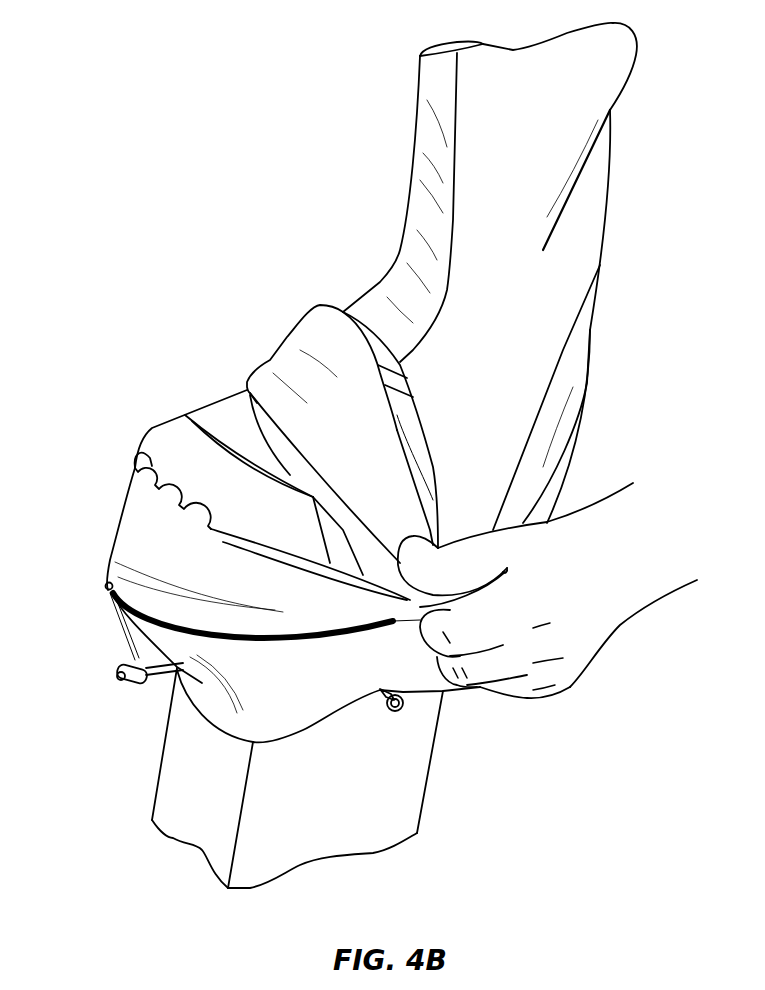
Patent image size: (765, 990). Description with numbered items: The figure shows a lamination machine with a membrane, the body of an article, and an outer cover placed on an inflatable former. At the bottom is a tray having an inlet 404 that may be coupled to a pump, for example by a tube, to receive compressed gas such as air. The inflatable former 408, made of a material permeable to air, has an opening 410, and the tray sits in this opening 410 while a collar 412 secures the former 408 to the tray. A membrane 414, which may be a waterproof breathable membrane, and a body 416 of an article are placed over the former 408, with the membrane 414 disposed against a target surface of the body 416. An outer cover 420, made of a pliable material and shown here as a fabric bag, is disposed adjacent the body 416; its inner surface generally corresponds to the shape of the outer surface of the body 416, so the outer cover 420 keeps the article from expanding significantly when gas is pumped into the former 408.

The inlet 404 is at (383, 806).
The inflatable former 408 is at (193, 567).
The opening 410 is at (245, 745).
The collar 412 is at (277, 647).
The membrane 414 is at (203, 541).
The body 416 is at (193, 456).
The outer cover 420 is at (487, 283).